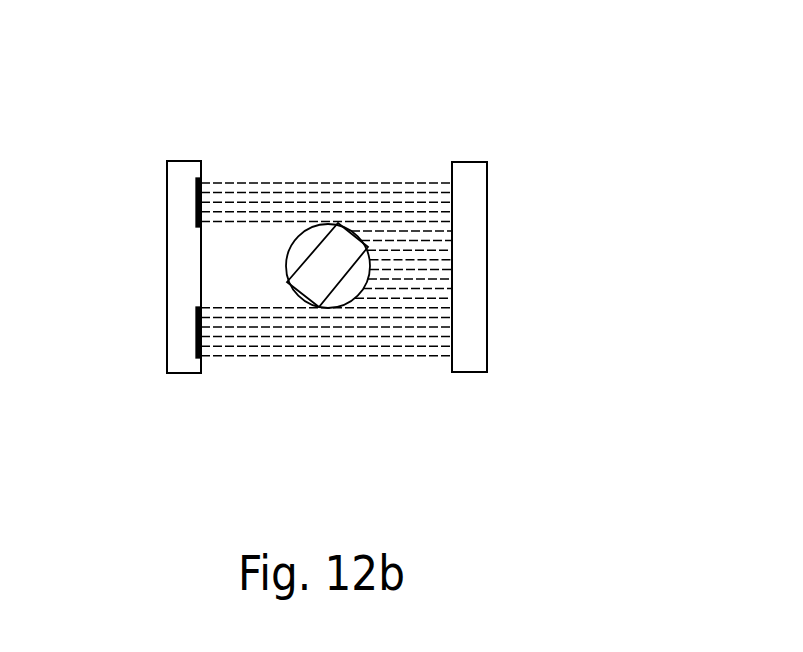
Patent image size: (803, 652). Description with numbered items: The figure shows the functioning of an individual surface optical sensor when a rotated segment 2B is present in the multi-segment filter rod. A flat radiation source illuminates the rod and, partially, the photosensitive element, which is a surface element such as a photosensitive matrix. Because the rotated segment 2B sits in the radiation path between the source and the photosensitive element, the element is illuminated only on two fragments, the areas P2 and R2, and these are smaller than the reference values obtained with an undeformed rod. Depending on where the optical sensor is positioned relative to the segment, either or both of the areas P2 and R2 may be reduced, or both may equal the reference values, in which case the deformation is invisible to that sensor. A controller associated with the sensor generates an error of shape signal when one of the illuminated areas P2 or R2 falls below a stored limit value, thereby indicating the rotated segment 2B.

The illuminated area P2 is at (202, 180).
The illuminated area R2 is at (203, 347).
The rotated segment 2B is at (335, 268).